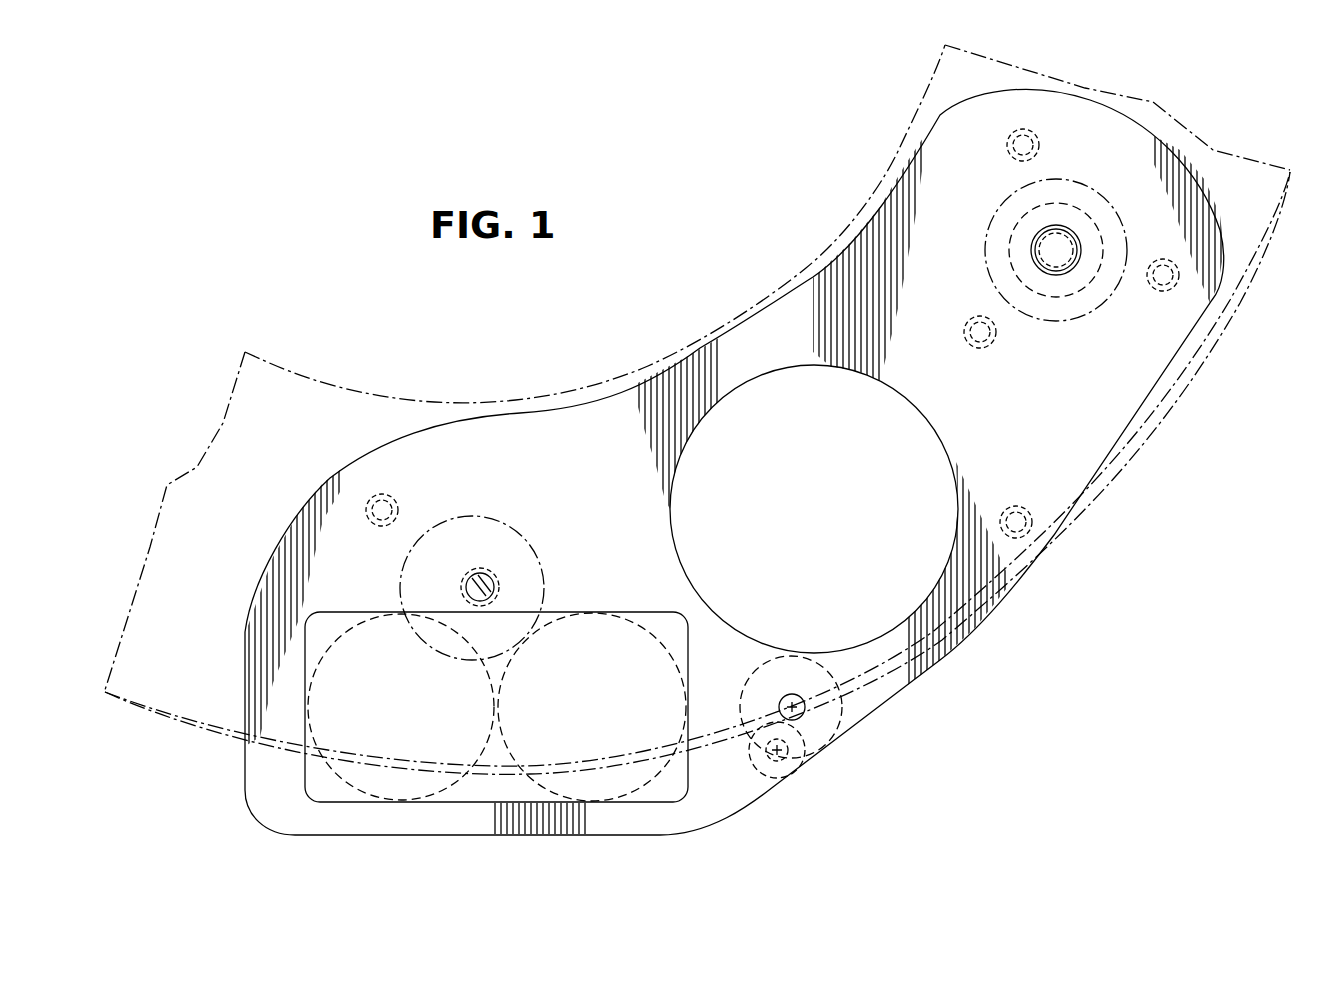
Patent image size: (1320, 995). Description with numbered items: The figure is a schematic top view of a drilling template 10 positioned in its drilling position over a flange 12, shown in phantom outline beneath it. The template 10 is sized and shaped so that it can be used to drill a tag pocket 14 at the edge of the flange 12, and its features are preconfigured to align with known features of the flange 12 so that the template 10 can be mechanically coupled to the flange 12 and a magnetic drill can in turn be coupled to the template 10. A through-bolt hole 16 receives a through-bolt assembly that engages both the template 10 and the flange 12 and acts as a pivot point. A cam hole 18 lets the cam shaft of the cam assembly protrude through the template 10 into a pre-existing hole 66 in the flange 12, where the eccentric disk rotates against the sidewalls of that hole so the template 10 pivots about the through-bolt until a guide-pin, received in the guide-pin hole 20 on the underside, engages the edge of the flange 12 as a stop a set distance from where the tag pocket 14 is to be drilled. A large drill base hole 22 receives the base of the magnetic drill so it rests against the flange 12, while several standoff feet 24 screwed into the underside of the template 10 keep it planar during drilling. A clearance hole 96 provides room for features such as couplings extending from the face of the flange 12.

The drilling template 10 is at (827, 283).
The flange 12 is at (263, 362).
The tag pocket 14 is at (803, 716).
The through-bolt hole 16 is at (1058, 270).
The cam hole 18 is at (497, 584).
The guide-pin hole 20 is at (778, 762).
The drill base hole 22 is at (307, 662).
The standoff feet 24 is at (378, 494).
The pre-existing hole 66 is at (454, 518).
The clearance hole 96 is at (915, 410).